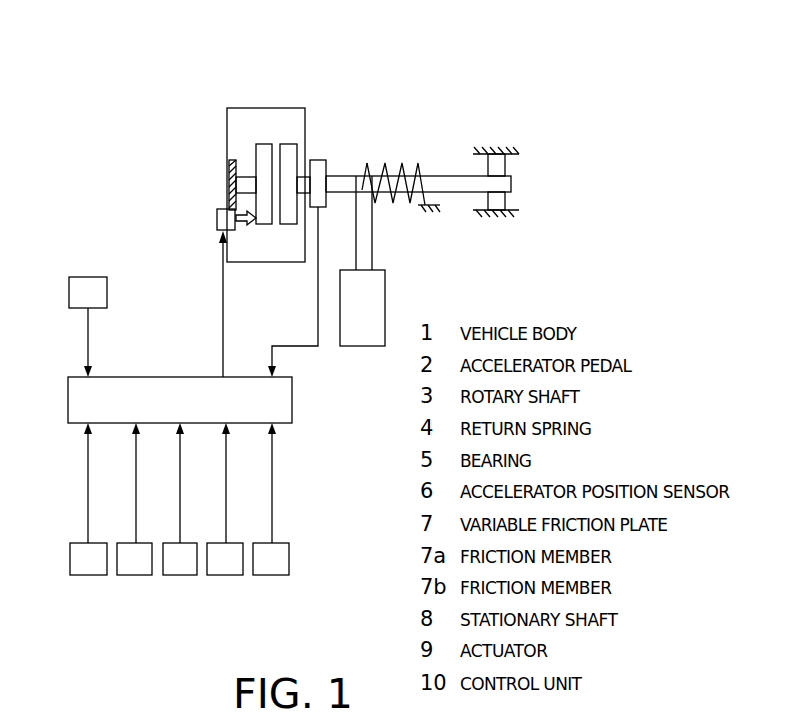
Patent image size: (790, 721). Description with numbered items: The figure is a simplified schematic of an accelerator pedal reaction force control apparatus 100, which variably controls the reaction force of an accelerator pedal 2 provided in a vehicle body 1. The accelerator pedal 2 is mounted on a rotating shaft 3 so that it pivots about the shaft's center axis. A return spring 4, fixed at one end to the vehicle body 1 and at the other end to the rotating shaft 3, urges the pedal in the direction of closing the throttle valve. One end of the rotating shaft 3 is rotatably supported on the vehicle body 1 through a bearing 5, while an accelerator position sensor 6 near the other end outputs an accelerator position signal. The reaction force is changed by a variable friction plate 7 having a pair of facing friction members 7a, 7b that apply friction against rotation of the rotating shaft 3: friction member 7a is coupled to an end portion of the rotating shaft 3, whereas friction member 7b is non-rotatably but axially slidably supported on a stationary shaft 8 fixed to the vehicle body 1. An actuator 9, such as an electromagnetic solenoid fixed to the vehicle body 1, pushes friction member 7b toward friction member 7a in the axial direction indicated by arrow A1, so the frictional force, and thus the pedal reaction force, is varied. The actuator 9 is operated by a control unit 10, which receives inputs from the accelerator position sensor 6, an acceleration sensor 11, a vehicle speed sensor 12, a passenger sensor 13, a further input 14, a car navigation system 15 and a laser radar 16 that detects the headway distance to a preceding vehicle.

The accelerator pedal reaction force control apparatus 100 is at (102, 108).
The vehicle body 1 is at (227, 179).
The accelerator pedal 2 is at (386, 259).
The rotating shaft 3 is at (446, 177).
The return spring 4 is at (385, 164).
The bearing 5 is at (505, 195).
The accelerator position sensor 6 is at (318, 160).
The variable friction plate 7 is at (286, 270).
The friction member 7a is at (286, 144).
The friction member 7b is at (259, 144).
The stationary shaft 8 is at (248, 177).
The actuator 9 is at (217, 218).
The control unit 10 is at (292, 400).
The acceleration sensor 11 is at (88, 559).
The vehicle speed sensor 12 is at (134, 559).
The passenger sensor 13 is at (180, 559).
The input unit 14 is at (225, 559).
The car navigation system 15 is at (271, 559).
The laser radar 16 is at (88, 292).
The arrow A1 is at (243, 226).